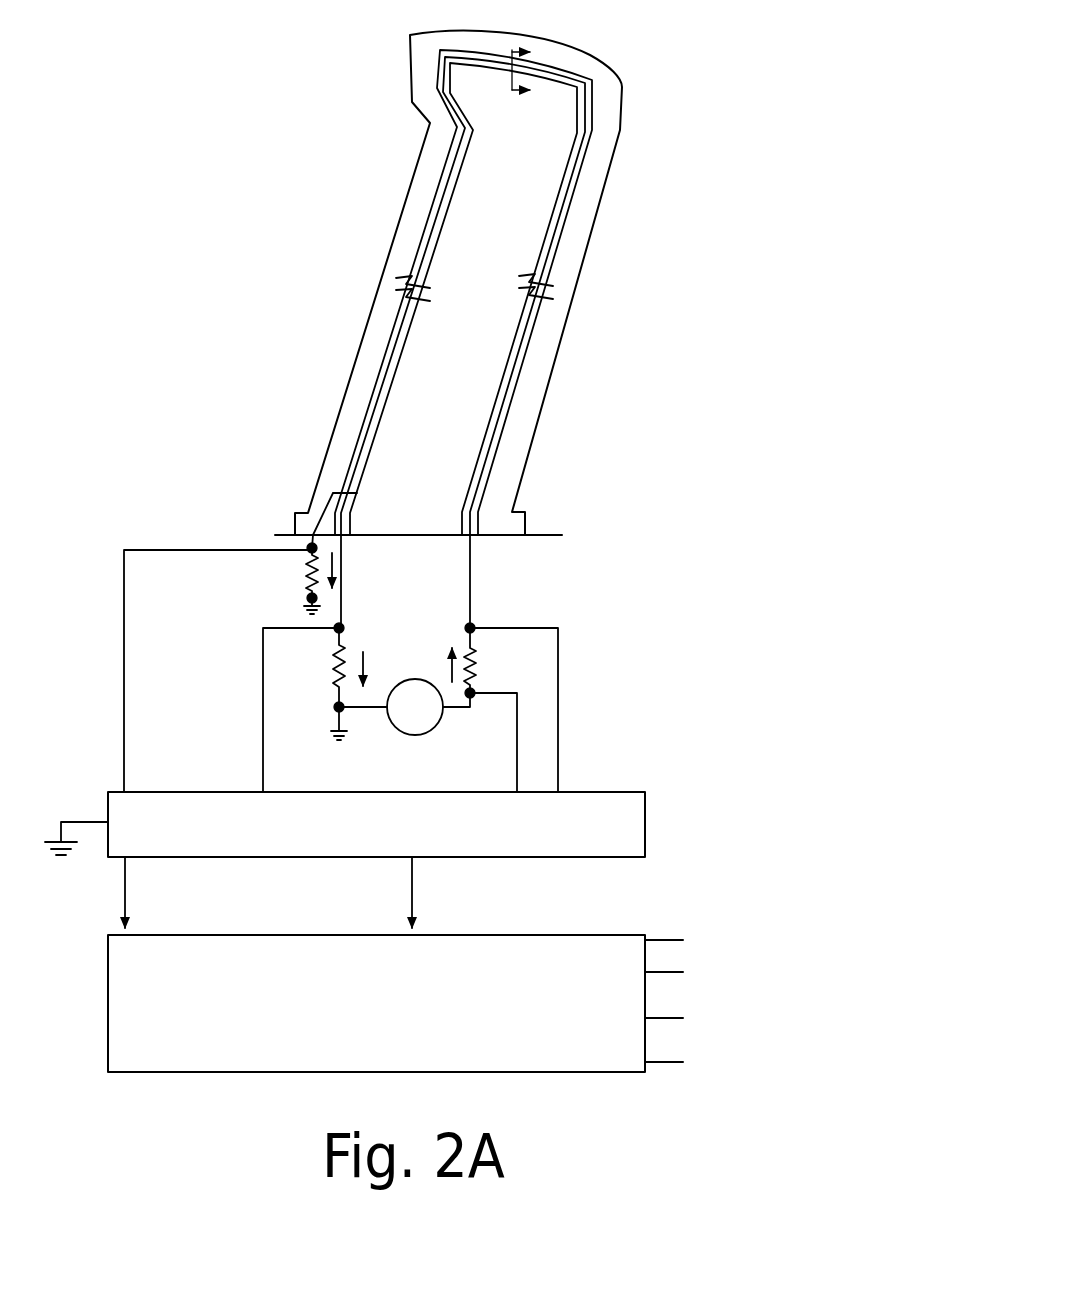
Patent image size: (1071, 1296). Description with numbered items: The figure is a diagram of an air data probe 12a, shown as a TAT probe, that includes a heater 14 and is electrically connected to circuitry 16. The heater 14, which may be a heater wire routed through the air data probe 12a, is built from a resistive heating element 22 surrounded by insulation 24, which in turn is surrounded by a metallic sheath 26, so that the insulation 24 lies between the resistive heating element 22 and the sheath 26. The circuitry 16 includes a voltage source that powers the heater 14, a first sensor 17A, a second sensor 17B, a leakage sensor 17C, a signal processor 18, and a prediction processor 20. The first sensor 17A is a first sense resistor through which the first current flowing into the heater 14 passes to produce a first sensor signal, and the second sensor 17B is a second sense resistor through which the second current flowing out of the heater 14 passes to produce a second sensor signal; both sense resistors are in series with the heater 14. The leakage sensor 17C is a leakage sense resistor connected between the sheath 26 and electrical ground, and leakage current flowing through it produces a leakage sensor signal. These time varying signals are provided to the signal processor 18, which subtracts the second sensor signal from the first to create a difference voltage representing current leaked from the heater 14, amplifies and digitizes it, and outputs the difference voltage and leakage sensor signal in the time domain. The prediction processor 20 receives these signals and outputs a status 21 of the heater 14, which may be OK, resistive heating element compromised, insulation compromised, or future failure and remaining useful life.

The air data probe 12a is at (411, 289).
The heater 14 is at (509, 299).
The resistive heating element 22 is at (498, 427).
The insulation 24 is at (495, 447).
The sheath 26 is at (493, 468).
The first sensor 17A is at (497, 638).
The second sensor 17B is at (355, 645).
The leakage sensor 17C is at (265, 589).
The circuitry 16 is at (442, 663).
The signal processor 18 is at (645, 815).
The prediction processor 20 is at (108, 998).
The status 21 is at (760, 930).